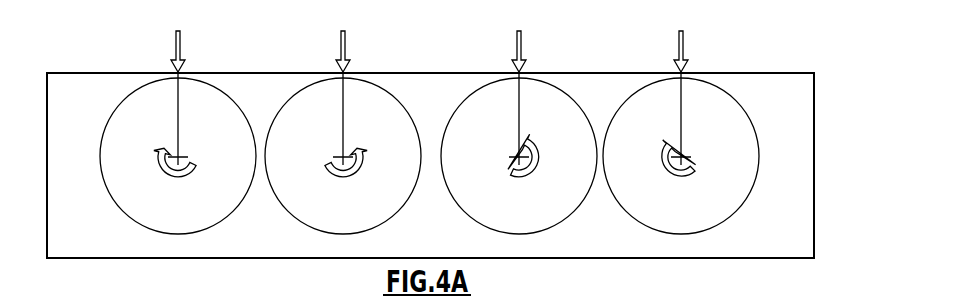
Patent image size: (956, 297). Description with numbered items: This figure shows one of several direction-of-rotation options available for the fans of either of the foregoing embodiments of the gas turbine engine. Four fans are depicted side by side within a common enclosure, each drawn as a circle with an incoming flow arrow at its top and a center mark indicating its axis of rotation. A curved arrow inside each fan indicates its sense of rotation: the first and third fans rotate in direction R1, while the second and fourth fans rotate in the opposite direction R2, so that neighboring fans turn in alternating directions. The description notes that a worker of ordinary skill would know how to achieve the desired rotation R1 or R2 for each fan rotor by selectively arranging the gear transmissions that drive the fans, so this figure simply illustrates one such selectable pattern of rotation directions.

The direction of rotation R1 is at (517, 179).
The direction of rotation R2 is at (669, 176).